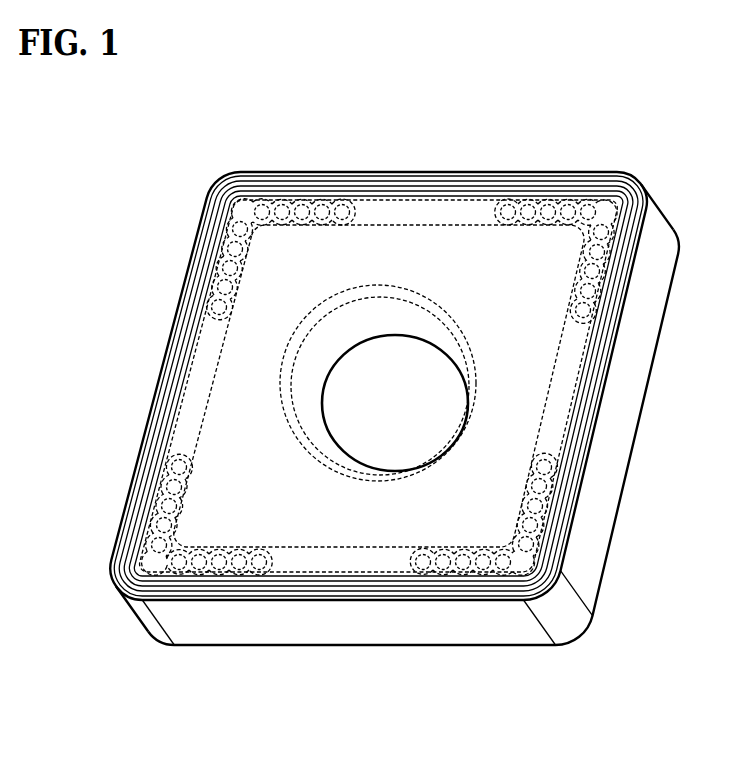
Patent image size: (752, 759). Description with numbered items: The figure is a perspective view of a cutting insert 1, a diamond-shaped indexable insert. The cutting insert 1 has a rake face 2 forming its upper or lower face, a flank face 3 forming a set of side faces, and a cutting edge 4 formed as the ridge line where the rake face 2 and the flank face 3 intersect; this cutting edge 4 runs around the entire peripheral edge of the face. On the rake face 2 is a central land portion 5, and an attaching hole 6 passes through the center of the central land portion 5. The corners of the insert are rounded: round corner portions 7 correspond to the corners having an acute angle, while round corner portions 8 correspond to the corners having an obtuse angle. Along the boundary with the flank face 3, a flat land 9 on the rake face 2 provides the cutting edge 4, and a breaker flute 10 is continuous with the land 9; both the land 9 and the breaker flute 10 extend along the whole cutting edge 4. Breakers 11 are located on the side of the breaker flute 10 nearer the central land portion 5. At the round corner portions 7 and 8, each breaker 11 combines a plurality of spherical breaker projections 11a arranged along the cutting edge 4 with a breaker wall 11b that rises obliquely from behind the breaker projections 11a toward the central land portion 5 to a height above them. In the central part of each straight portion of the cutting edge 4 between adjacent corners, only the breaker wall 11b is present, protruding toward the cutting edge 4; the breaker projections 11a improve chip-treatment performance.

The cutting insert 1 is at (508, 160).
The rake face 2 is at (140, 542).
The flank face 3 is at (168, 624).
The cutting edge 4 is at (133, 587).
The central land portion 5 is at (235, 390).
The attaching hole 6 is at (403, 318).
The round corner portions 7 is at (653, 197).
The round corner portions 8 is at (217, 181).
The flat land 9 is at (212, 603).
The breaker flute 10 is at (278, 590).
The breakers 11 is at (57, 352).
The breaker projections 11a is at (170, 483).
The breaker wall 11b is at (192, 440).